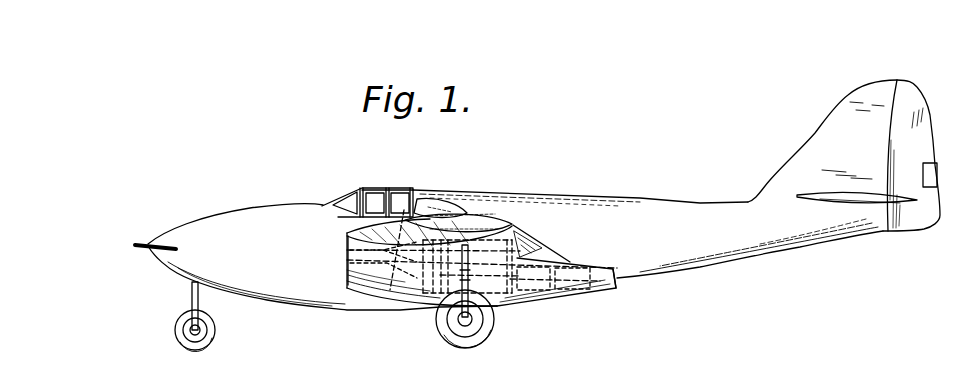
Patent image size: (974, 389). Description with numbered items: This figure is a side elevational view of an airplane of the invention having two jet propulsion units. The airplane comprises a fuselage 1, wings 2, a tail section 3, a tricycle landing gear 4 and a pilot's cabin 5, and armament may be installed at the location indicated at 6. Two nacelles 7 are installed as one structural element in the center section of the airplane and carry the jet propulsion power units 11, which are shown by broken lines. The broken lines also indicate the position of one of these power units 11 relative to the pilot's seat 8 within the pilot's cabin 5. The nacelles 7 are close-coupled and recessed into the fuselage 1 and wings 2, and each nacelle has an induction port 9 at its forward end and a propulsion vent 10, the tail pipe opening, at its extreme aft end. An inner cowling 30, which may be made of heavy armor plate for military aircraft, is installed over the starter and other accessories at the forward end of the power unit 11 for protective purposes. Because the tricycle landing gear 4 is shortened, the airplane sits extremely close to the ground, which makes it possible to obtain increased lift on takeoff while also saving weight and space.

The fuselage 1 is at (515, 250).
The wings 2 is at (483, 219).
The tail section 3 is at (843, 117).
The tricycle landing gear 4 is at (183, 333).
The pilot's cabin 5 is at (375, 198).
The armament 6 is at (137, 247).
The nacelles 7 is at (517, 305).
The pilot's seat 8 is at (353, 258).
The induction port 9 is at (347, 273).
The propulsion vent 10 is at (617, 280).
The jet propulsion power unit 11 is at (427, 290).
The inner cowling 30 is at (380, 297).